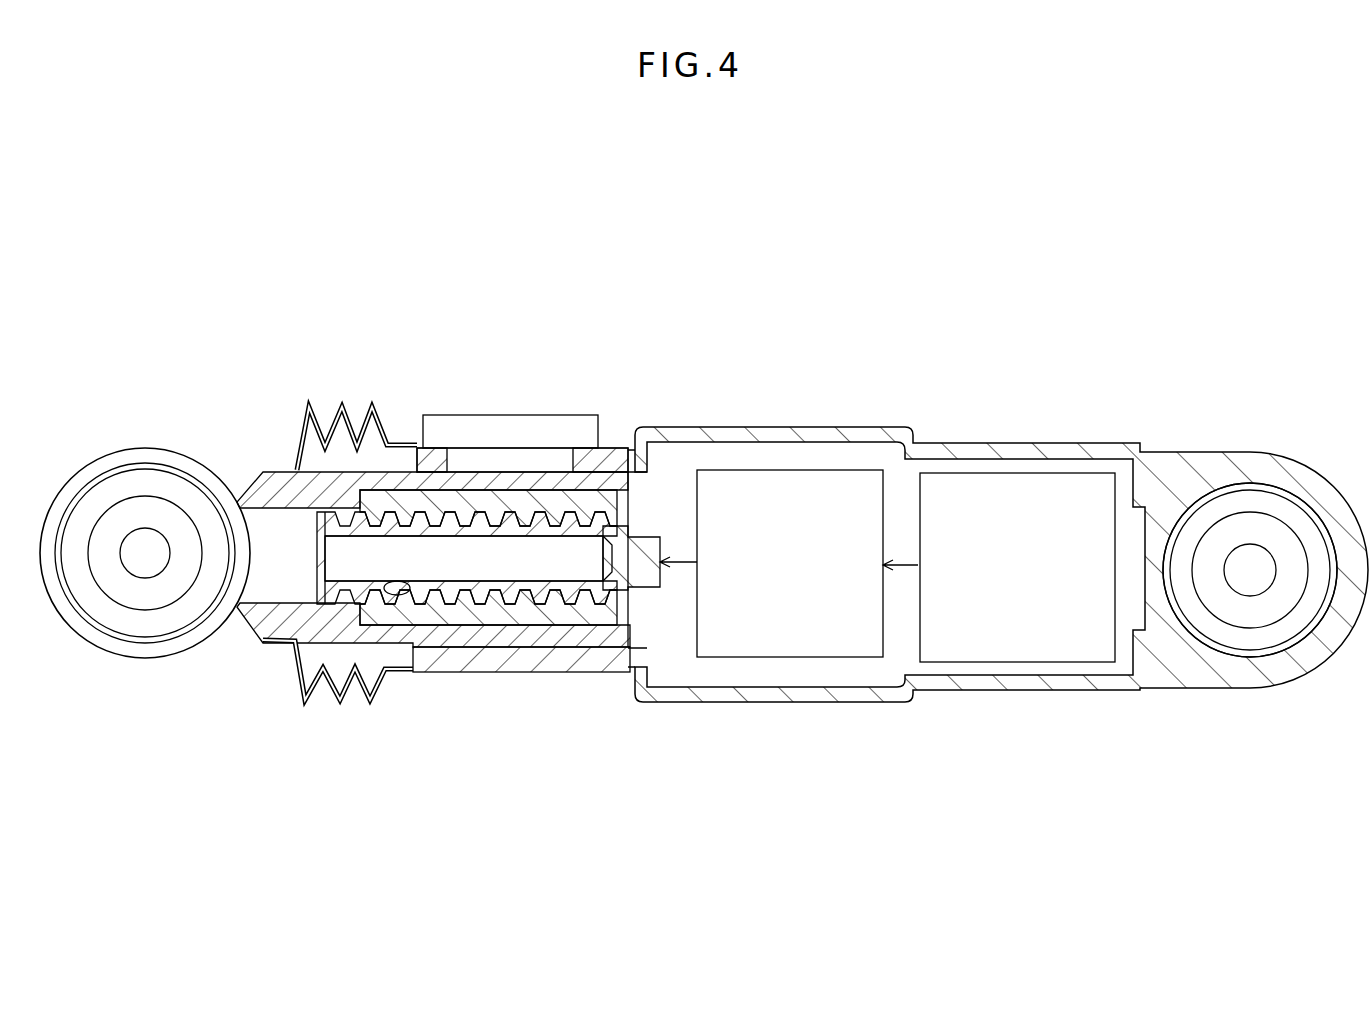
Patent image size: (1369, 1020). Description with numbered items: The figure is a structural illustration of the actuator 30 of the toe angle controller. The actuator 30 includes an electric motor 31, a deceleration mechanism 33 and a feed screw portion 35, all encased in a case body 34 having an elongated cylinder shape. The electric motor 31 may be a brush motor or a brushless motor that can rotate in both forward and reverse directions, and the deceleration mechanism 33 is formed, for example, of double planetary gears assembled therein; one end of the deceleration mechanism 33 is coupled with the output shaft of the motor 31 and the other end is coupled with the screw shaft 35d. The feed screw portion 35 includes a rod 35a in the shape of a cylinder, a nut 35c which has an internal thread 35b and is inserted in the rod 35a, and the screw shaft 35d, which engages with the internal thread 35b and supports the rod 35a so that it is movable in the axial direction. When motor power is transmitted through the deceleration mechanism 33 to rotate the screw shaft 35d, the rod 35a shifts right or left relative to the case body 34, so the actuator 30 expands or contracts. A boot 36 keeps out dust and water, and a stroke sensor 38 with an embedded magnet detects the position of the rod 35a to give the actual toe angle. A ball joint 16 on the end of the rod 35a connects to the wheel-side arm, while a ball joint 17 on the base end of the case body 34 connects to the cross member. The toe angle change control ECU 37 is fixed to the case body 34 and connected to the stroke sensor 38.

The actuator 30 is at (1062, 281).
The ball joint 16 is at (113, 463).
The ball joint 17 is at (1287, 480).
The electric motor 31 is at (1057, 475).
The deceleration mechanism 33 is at (805, 470).
The case body 34 is at (472, 660).
The feed screw portion 35 is at (536, 688).
The rod 35a is at (248, 630).
The internal thread 35b is at (385, 596).
The nut 35c is at (433, 612).
The screw shaft 35d is at (578, 612).
The boot 36 is at (342, 405).
The toe angle change control ECU 37 is at (557, 409).
The stroke sensor 38 is at (485, 452).